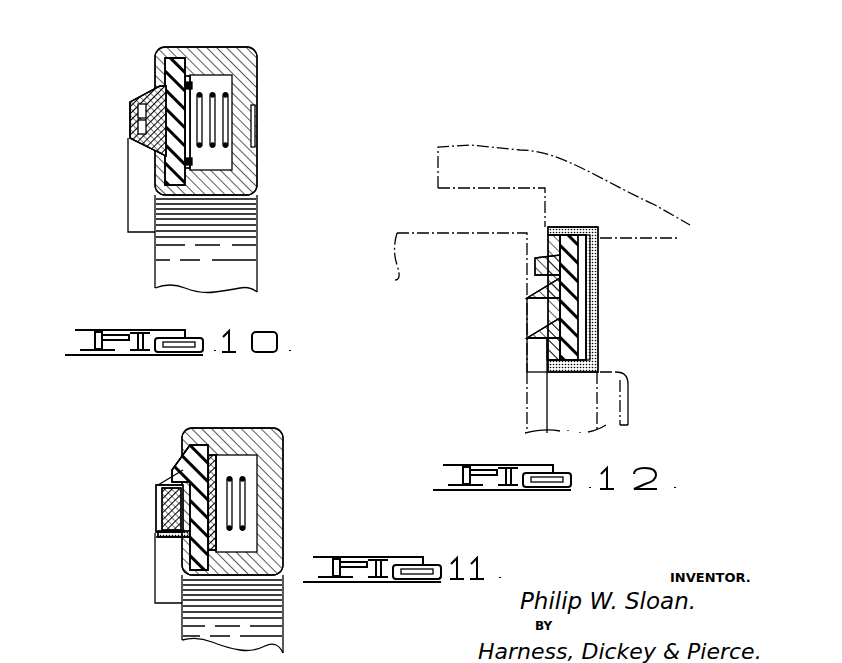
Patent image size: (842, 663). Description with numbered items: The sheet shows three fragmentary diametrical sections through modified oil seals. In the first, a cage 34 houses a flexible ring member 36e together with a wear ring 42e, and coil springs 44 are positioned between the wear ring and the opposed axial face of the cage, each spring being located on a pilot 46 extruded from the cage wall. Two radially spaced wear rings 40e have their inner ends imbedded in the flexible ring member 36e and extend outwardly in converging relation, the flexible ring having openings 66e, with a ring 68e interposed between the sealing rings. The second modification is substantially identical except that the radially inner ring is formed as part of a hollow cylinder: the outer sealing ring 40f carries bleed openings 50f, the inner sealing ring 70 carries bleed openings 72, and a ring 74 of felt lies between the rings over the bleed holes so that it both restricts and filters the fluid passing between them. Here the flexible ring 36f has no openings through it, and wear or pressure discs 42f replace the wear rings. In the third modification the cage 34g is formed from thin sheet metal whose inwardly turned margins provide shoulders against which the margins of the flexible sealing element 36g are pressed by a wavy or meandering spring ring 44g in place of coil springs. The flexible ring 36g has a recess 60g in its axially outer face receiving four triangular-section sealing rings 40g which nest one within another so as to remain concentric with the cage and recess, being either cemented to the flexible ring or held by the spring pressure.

In FIG. 10, the cage 34 is at (252, 58).
In FIG. 11, the cage 34 is at (278, 432).
In FIG. 10, the coil springs 44 is at (203, 100).
In FIG. 11, the coil springs 44 is at (232, 485).
In FIG. 10, the pilot 46 is at (234, 126).
In FIG. 10, the wear ring 42e is at (190, 95).
In FIG. 10, the flexible ring member 36e is at (175, 60).
In FIG. 10, the wear rings 40e is at (140, 98).
In FIG. 10, the openings 66e is at (138, 110).
In FIG. 10, the ring 68e is at (138, 126).
In FIG. 11, the wear or pressure discs 42f is at (214, 552).
In FIG. 11, the flexible ring 36f is at (200, 445).
In FIG. 11, the outer sealing ring 40f is at (165, 488).
In FIG. 11, the bleed openings 50f is at (170, 478).
In FIG. 11, the ring of felt 74 is at (165, 508).
In FIG. 12, the ring of felt 74 is at (548, 238).
In FIG. 11, the inner sealing ring 70 is at (165, 535).
In FIG. 11, the bleed openings 72 is at (170, 540).
In FIG. 12, the cage 34g is at (596, 228).
In FIG. 12, the wavy or meandering spring ring 44g is at (596, 290).
In FIG. 12, the flexible sealing element 36g is at (572, 228).
In FIG. 12, the recess 60g is at (545, 265).
In FIG. 12, the sealing rings 40g is at (540, 292).